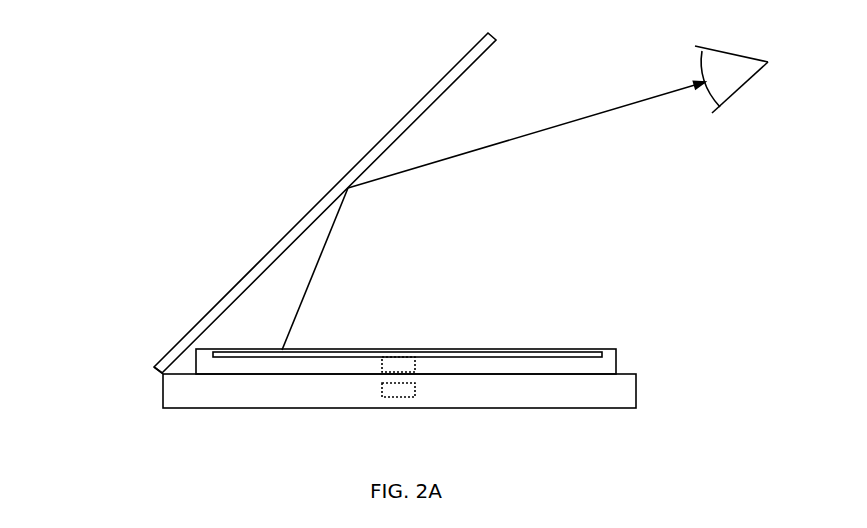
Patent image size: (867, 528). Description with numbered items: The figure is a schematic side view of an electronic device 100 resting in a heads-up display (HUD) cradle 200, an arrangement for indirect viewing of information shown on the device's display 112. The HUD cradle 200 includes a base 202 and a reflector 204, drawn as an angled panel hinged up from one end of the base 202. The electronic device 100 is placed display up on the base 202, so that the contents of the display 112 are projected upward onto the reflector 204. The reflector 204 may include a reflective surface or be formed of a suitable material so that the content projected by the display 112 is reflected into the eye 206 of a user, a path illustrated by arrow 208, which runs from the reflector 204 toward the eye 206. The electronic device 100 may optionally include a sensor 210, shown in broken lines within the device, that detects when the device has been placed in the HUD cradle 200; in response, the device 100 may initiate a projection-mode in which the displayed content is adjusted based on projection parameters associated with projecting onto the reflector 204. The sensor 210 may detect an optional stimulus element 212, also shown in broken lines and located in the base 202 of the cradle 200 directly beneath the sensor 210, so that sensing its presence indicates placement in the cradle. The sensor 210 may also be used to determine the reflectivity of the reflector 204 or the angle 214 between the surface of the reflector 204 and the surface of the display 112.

The heads-up display cradle 200 is at (146, 352).
The base 202 is at (227, 392).
The reflector 204 is at (437, 96).
The eye 206 is at (725, 58).
The arrow 208 is at (560, 126).
The sensor 210 is at (405, 362).
The stimulus element 212 is at (398, 390).
The angle 214 is at (233, 349).
The electronic device 100 is at (614, 367).
The display 112 is at (367, 352).